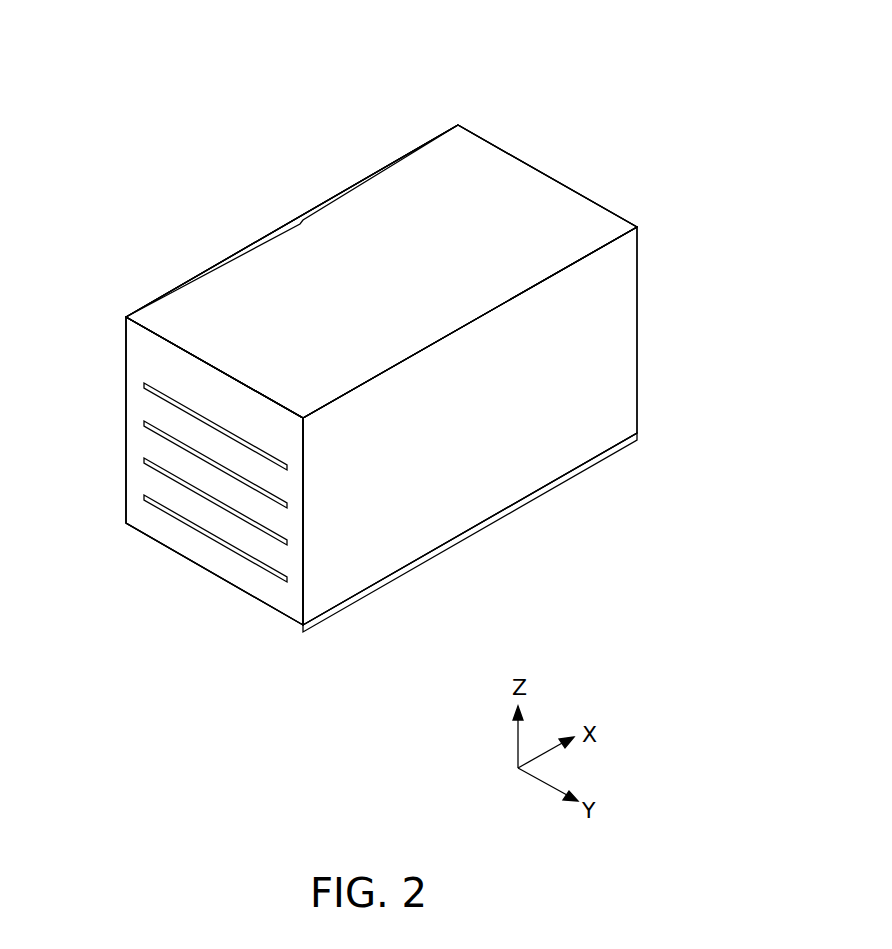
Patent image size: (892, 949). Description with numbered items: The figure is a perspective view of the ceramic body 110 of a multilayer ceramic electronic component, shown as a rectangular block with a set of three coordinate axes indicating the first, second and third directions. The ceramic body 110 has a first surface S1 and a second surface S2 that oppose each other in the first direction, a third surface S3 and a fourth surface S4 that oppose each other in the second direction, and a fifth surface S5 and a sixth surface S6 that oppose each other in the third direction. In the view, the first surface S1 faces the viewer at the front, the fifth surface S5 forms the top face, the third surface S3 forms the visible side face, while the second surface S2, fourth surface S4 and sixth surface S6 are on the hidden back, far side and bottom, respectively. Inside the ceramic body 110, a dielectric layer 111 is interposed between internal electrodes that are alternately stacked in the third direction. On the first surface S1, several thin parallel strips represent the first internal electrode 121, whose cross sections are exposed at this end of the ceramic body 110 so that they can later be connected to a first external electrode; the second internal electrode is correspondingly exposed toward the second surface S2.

The ceramic body 110 is at (141, 38).
The dielectric layer 111 is at (133, 457).
The first internal electrode 121 is at (162, 398).
The first surface S1 is at (200, 496).
The second surface S2 is at (554, 217).
The third surface S3 is at (610, 360).
The fourth surface S4 is at (236, 291).
The fifth surface S5 is at (384, 204).
The sixth surface S6 is at (436, 510).